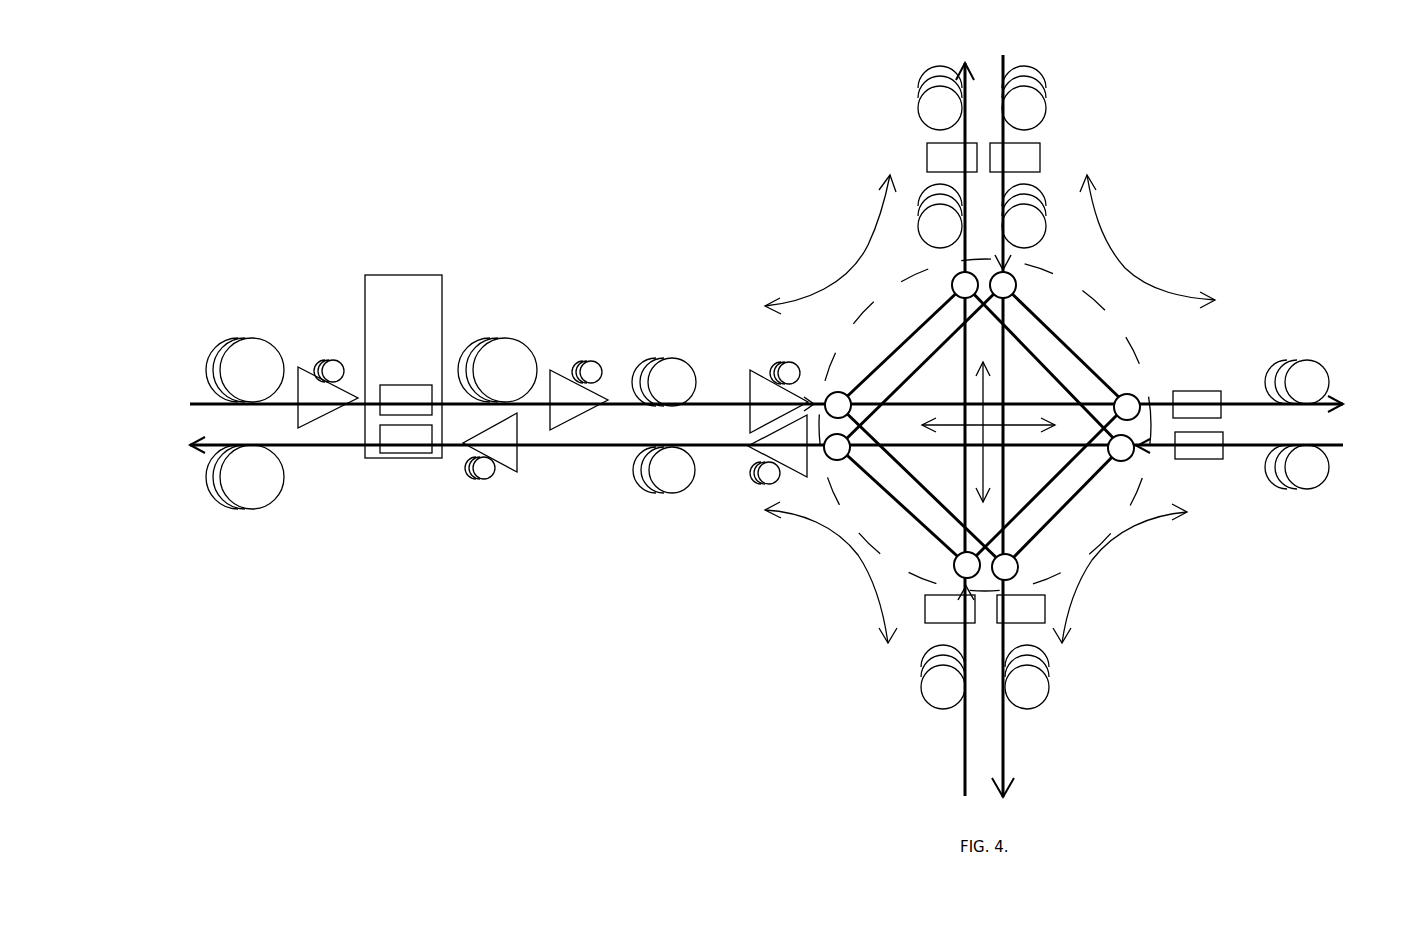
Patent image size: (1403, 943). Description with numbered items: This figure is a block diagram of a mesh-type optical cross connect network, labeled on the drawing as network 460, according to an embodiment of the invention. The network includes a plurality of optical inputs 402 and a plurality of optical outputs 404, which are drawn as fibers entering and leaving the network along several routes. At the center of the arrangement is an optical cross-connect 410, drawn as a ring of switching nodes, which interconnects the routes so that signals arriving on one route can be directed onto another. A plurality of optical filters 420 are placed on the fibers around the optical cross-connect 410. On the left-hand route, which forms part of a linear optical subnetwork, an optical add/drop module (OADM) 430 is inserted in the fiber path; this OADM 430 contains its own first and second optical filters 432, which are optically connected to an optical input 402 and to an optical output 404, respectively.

The optical network 460 is at (752, 102).
The optical input 402 is at (1004, 60).
The optical output 404 is at (960, 60).
The optical filter 420 is at (1040, 157).
The optical cross-connect 410 is at (1152, 477).
The optical add/drop module (OADM) 430 is at (397, 276).
The optical filter of the OADM 432 is at (385, 412).